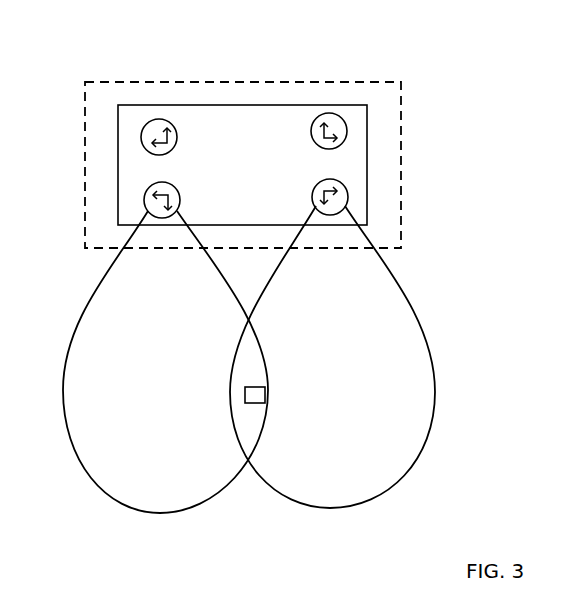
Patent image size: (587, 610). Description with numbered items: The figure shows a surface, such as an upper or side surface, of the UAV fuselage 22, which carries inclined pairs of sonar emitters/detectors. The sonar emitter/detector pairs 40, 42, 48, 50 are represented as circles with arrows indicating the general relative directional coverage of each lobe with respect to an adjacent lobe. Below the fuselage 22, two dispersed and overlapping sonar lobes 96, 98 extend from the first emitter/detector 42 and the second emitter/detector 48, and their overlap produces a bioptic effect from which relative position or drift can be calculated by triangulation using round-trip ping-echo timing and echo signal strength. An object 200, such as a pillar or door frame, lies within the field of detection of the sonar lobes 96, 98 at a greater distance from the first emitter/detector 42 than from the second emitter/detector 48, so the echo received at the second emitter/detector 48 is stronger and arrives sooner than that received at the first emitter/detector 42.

The fuselage 22 is at (286, 78).
The sonar emitter/detector pair 40 is at (178, 138).
The first emitter/detector 42 is at (180, 198).
The second emitter/detector 48 is at (312, 192).
The sonar emitter/detector pair 50 is at (311, 131).
The sonar lobe 96 is at (160, 519).
The sonar lobe 98 is at (356, 510).
The object 200 is at (256, 404).